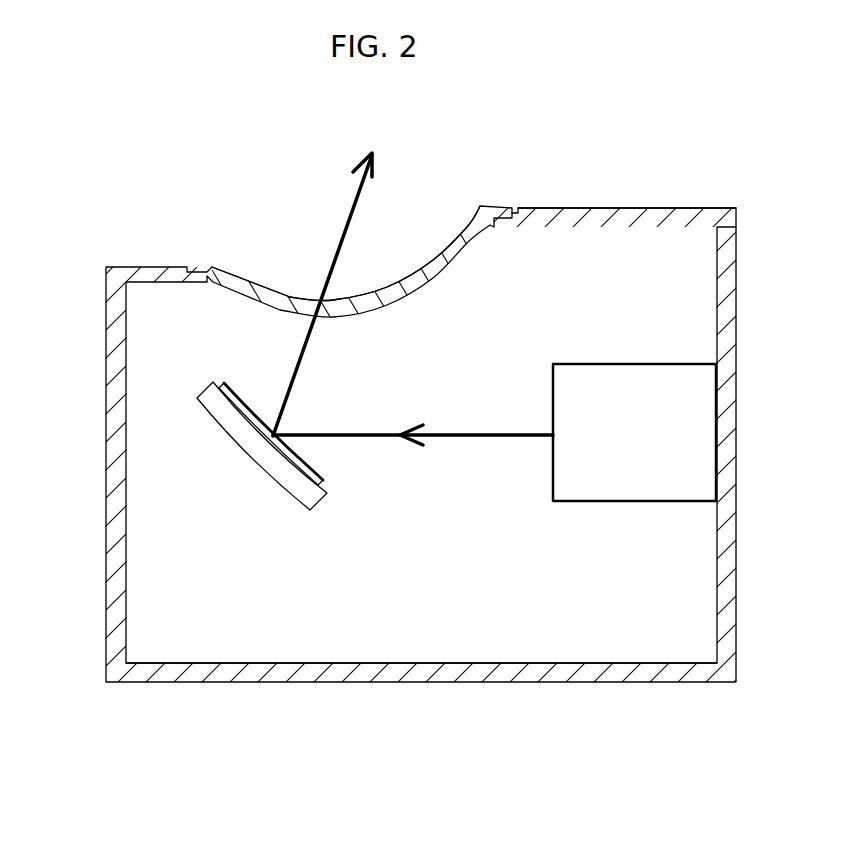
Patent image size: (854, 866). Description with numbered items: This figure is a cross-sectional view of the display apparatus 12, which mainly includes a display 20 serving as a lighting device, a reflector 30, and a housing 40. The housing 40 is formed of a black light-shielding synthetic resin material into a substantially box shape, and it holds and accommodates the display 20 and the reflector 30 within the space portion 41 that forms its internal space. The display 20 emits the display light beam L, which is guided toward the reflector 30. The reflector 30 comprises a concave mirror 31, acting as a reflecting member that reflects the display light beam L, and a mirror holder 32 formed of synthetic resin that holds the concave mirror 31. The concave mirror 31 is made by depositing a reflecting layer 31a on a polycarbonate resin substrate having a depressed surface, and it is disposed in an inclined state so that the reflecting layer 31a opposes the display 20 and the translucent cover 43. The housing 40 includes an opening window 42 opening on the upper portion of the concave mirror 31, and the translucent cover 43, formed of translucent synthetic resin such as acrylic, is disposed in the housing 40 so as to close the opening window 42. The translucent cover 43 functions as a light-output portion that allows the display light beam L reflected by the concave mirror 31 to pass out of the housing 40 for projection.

The display apparatus 12 is at (155, 171).
The display 20 is at (623, 362).
The reflector 30 is at (212, 427).
The concave mirror 31 is at (318, 483).
The reflecting layer 31a is at (238, 395).
The mirror holder 32 is at (253, 445).
The housing 40 is at (405, 684).
The space portion 41 is at (252, 635).
The opening window 42 is at (515, 208).
The translucent cover 43 is at (243, 290).
The display light beam L is at (363, 433).